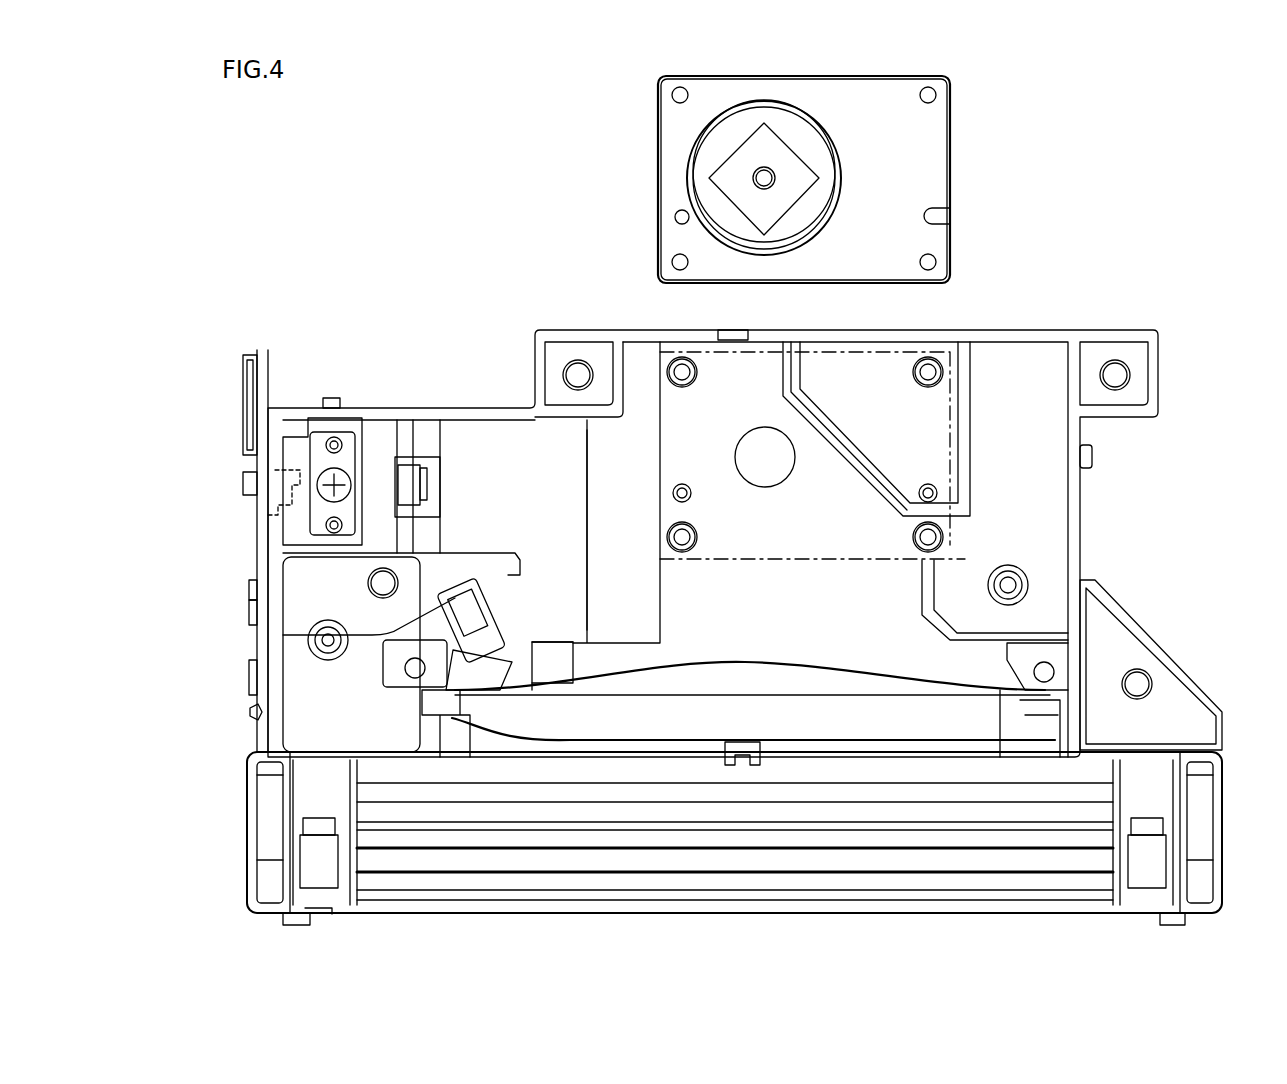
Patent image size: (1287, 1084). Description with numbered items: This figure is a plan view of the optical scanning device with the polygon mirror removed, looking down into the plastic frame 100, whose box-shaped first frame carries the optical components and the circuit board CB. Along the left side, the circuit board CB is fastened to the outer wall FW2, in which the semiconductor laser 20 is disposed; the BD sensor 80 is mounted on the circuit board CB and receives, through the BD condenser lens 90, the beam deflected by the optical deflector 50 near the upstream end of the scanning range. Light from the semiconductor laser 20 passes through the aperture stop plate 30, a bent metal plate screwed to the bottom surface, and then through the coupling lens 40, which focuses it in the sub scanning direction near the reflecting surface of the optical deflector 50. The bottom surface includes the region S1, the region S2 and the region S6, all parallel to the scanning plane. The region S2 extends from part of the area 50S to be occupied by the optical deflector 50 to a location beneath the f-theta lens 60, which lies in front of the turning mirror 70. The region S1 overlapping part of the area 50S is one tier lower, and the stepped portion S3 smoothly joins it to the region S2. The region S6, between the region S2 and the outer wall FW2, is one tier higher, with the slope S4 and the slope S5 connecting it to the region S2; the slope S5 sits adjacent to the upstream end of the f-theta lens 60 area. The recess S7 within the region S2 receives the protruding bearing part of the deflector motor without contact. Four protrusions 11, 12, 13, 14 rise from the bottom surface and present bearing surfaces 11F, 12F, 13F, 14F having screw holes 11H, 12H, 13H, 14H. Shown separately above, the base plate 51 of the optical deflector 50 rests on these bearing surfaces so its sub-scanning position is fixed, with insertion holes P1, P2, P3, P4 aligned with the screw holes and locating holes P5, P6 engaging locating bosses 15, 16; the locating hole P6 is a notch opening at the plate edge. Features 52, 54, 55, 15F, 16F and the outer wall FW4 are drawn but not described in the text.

The optical deflector 50 is at (1040, 178).
The base plate 51 is at (952, 147).
The circular boss 52 is at (693, 130).
The shaft hole 54 is at (755, 170).
The diamond key 55 is at (727, 176).
The insertion hole P1 is at (937, 95).
The insertion hole P2 is at (672, 262).
The insertion hole P3 is at (672, 95).
The insertion hole P4 is at (937, 262).
The locating hole P5 is at (674, 215).
The locating hole P6 is at (940, 218).
The frame 100 is at (1082, 515).
The area to be occupied by the optical deflector 50S is at (975, 405).
The region S1 is at (908, 424).
The region S2 is at (804, 596).
The stepped portion S3 is at (860, 470).
The slope S4 is at (644, 532).
The slope S5 is at (574, 677).
The region S6 is at (537, 494).
The recess S7 is at (781, 470).
The protrusion 11 is at (935, 358).
The screw hole 11H is at (920, 360).
The bearing surface 11F is at (946, 372).
The protrusion 12 is at (698, 533).
The screw hole 12H is at (680, 545).
The bearing surface 12F is at (692, 550).
The protrusion 13 is at (690, 358).
The screw hole 13H is at (678, 360).
The bearing surface 13F is at (700, 372).
The protrusion 14 is at (912, 537).
The screw hole 14H is at (920, 548).
The bearing surface 14F is at (945, 537).
The locating boss 15 is at (675, 490).
The flange 15F is at (684, 484).
The locating boss 16 is at (938, 492).
The flange 16F is at (924, 486).
The aperture stop plate 30 is at (330, 432).
The coupling lens 40 is at (397, 470).
The semiconductor laser 20 is at (268, 508).
The circuit board CB is at (257, 530).
The outer wall FW2 is at (258, 590).
The frame wall FW4 is at (602, 915).
The BD condenser lens 90 is at (470, 610).
The BD sensor 80 is at (257, 712).
The f-theta lens 60 is at (820, 720).
The turning mirror 70 is at (922, 862).